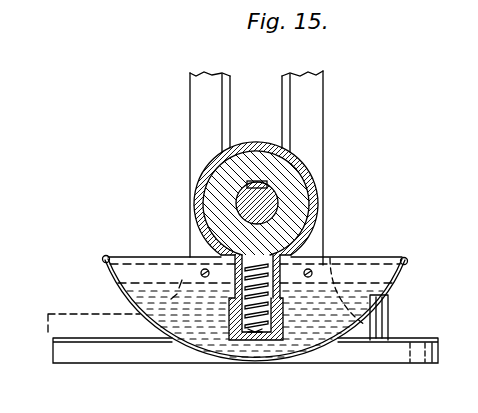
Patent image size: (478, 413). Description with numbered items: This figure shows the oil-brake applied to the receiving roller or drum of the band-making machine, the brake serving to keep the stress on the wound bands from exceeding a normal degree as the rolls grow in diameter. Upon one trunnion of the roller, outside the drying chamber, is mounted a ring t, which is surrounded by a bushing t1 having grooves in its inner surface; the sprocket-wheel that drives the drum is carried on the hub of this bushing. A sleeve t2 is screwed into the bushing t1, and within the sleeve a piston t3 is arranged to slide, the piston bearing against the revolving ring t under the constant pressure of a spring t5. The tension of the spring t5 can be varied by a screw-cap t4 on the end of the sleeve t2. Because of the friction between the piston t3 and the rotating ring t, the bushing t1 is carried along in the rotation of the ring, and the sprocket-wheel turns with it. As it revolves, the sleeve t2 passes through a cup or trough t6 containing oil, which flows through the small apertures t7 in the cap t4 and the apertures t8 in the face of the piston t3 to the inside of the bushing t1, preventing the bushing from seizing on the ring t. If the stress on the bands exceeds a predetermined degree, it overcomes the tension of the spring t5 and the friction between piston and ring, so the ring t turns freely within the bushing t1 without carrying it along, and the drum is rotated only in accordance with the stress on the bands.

The bushing t1 is at (310, 180).
The ring t is at (303, 209).
The apertures in the face of the piston t8 is at (302, 228).
The sleeve t2 is at (295, 290).
The piston t3 is at (212, 251).
The cup or trough t6 is at (390, 282).
The screw-cap t4 is at (287, 330).
The spring t5 is at (248, 336).
The apertures in the cap t7 is at (255, 338).